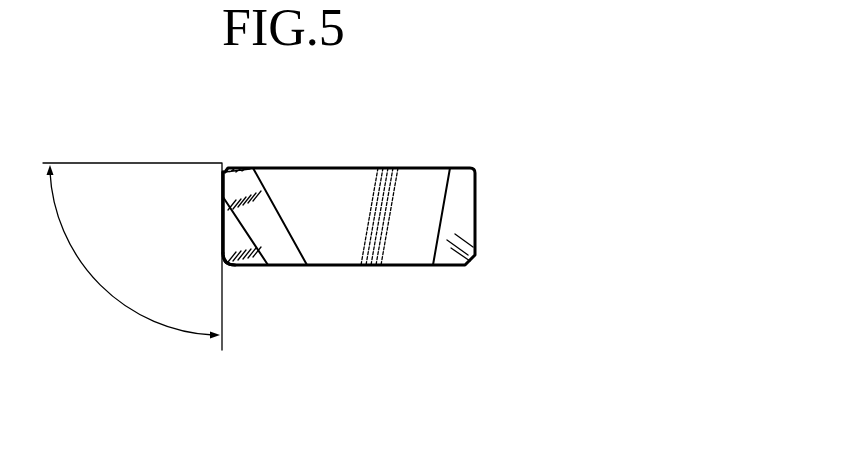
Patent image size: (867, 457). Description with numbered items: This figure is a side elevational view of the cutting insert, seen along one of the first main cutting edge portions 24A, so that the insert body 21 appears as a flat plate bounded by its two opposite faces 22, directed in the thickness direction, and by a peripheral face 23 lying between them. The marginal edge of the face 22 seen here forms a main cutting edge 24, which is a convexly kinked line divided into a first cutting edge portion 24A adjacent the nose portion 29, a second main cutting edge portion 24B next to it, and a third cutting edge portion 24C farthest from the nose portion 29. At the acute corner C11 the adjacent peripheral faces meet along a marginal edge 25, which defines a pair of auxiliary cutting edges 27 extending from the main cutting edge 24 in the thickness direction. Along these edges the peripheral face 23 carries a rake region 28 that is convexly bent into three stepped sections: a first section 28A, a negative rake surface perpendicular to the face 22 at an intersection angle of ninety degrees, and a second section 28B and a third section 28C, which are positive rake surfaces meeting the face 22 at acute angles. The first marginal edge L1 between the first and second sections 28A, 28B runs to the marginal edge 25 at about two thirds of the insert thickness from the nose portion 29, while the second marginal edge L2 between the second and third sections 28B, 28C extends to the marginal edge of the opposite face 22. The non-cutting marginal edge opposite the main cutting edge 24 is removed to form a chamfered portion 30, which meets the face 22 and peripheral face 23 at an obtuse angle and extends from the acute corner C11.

The insert body 21 is at (538, 88).
The face 22 is at (402, 152).
The peripheral face 23 is at (421, 180).
The main cutting edge 24 is at (222, 168).
The first cutting edge portion 24A is at (260, 267).
The second main cutting edge portion 24B is at (292, 267).
The third cutting edge portion 24C is at (335, 267).
The marginal edge 25 is at (222, 220).
The auxiliary cutting edge 27 is at (222, 194).
The rake region 28 is at (365, 85).
The first section 28A is at (238, 243).
The second section 28B is at (282, 192).
The third section 28C is at (301, 170).
The nose portion 29 is at (239, 273).
The chamfered portion 30 is at (243, 169).
The acute corner C11 is at (212, 205).
The first marginal edge L1 is at (262, 252).
The second marginal edge L2 is at (268, 225).